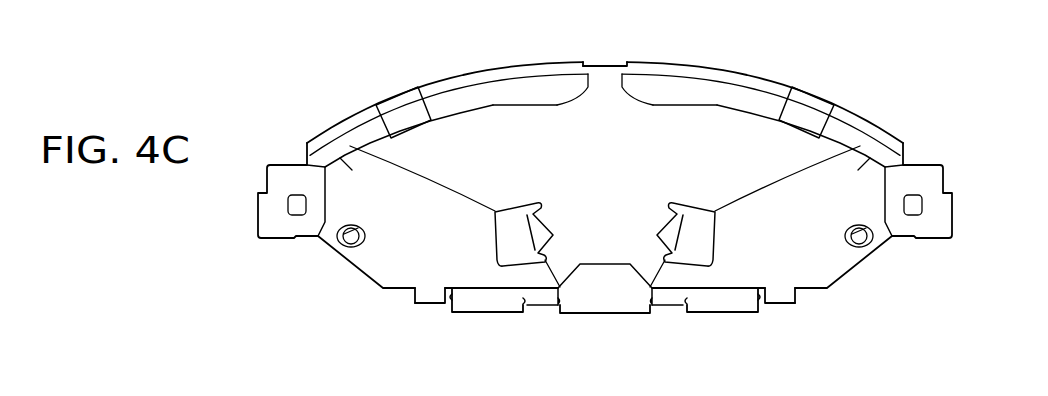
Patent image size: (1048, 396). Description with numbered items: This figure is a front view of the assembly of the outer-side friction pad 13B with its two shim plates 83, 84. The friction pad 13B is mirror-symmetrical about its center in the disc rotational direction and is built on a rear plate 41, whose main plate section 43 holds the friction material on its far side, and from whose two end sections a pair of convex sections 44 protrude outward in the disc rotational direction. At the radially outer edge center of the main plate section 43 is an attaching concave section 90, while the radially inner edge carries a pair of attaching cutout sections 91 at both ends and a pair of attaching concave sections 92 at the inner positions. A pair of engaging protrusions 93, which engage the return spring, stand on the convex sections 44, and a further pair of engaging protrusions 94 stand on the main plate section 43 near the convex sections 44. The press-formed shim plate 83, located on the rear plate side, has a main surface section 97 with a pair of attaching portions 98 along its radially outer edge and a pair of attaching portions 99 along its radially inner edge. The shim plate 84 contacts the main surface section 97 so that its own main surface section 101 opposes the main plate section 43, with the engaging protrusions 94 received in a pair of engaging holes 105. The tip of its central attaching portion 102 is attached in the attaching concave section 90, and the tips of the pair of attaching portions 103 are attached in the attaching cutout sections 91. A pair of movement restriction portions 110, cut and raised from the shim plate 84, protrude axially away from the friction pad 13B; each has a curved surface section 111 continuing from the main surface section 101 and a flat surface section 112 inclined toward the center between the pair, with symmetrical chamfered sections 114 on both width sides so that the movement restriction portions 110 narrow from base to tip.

The friction pad 13B is at (965, 150).
The rear plate 41 is at (287, 256).
The main plate section 43 is at (467, 103).
The convex sections 44 is at (275, 228).
The shim plate 83 is at (391, 84).
The shim plate 84 is at (522, 91).
The attaching concave section 90 is at (581, 62).
The attaching cutout sections 91 is at (413, 300).
The attaching concave sections 92 is at (527, 309).
The engaging protrusions 93 is at (294, 196).
The engaging protrusions 94 is at (352, 240).
The main surface section 97 is at (686, 306).
The attaching portions 98 is at (378, 100).
The attaching portions 99 is at (538, 307).
The main surface section 101 is at (687, 130).
The attaching portion 102 is at (606, 66).
The attaching portions 103 is at (428, 305).
The engaging holes 105 is at (353, 225).
The movement restriction portions 110 is at (522, 237).
The curved surface section 111 is at (503, 266).
The flat surface section 112 is at (352, 168).
The chamfered sections 114 is at (550, 207).